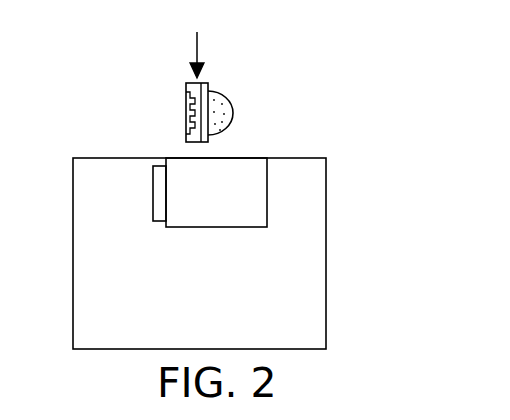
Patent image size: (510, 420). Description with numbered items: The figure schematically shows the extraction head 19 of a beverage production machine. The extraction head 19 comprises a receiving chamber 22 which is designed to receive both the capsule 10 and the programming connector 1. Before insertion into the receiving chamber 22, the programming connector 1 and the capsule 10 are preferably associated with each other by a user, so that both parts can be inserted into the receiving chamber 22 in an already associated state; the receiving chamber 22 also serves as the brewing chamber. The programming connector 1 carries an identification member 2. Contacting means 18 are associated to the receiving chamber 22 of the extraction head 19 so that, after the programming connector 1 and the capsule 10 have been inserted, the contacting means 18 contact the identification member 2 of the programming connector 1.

The programming connector 1 is at (186, 88).
The identification member 2 is at (186, 121).
The capsule 10 is at (234, 113).
The contacting means 18 is at (158, 190).
The extraction head 19 is at (312, 218).
The receiving chamber 22 is at (252, 188).